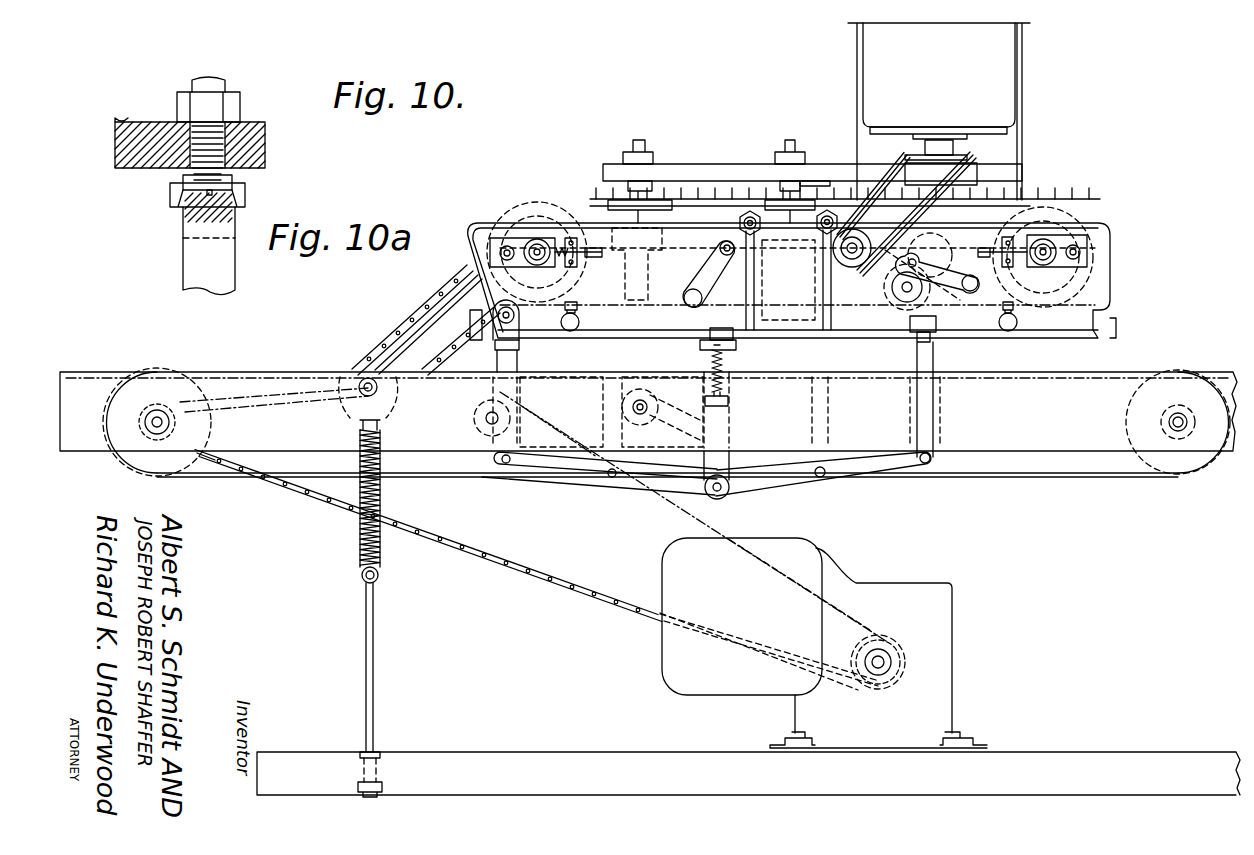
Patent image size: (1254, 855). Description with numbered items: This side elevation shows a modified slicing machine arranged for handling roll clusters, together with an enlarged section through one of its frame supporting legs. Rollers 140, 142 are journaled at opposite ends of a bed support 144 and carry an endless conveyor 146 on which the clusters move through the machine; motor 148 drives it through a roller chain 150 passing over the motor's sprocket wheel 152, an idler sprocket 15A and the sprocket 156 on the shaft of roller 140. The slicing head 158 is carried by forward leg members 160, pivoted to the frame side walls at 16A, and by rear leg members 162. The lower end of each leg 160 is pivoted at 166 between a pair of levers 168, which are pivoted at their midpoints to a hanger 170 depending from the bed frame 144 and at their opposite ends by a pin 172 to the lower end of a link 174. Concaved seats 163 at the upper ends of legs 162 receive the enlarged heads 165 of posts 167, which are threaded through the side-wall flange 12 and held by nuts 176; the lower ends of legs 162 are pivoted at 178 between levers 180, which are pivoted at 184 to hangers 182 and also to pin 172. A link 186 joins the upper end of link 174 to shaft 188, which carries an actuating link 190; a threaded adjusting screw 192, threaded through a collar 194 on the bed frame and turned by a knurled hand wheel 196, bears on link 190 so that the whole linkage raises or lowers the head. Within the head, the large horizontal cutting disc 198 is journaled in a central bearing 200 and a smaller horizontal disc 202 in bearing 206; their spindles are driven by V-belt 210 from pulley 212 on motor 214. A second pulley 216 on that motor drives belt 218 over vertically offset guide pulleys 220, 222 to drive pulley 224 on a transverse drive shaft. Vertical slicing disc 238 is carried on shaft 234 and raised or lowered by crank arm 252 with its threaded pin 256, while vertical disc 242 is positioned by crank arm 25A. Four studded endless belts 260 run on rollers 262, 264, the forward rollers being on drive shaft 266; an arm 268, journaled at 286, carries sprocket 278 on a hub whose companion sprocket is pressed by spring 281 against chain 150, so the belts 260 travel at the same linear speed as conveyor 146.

In FIG. 10A, the table plate 12 is at (272, 143).
In FIG. 10, the idler sprocket 15A is at (485, 422).
In FIG. 10, the pivot 16A is at (482, 340).
In FIG. 10, the roller 140 is at (150, 465).
In FIG. 10, the roller 142 is at (1195, 382).
In FIG. 10, the bed support 144 is at (113, 360).
In FIG. 10, the endless conveyor 146 is at (217, 482).
In FIG. 10, the motor 148 is at (672, 652).
In FIG. 10, the roller chain 150 is at (486, 556).
In FIG. 10, the sprocket wheel 152 is at (898, 670).
In FIG. 10, the sprocket 156 is at (142, 412).
In FIG. 10, the slicing head 158 is at (1110, 260).
In FIG. 10, the forward leg members 160 is at (518, 362).
In FIG. 10, the rear leg members 162 is at (935, 365).
In FIG. 10A, the rear leg members 162 is at (232, 275).
In FIG. 10A, the concaved seats 163 is at (248, 196).
In FIG. 10A, the enlarged heads 165 is at (180, 183).
In FIG. 10, the pivot 166 is at (498, 458).
In FIG. 10A, the posts 167 is at (212, 148).
In FIG. 10, the levers 168 is at (590, 478).
In FIG. 10, the hanger 170 is at (606, 392).
In FIG. 10, the pin 172 is at (728, 495).
In FIG. 10, the link 174 is at (732, 445).
In FIG. 10, the nuts 176 is at (912, 333).
In FIG. 10A, the nuts 176 is at (235, 108).
In FIG. 10, the pivot 178 is at (920, 464).
In FIG. 10, the levers 180 is at (880, 478).
In FIG. 10, the hangers 182 is at (820, 414).
In FIG. 10, the pivot 184 is at (815, 478).
In FIG. 10, the link 186 is at (690, 388).
In FIG. 10, the shaft 188 is at (644, 414).
In FIG. 10, the actuating link 190 is at (676, 410).
In FIG. 10, the threaded adjusting screw 192 is at (730, 398).
In FIG. 10, the collar 194 is at (700, 350).
In FIG. 10, the knurled hand wheel 196 is at (760, 360).
In FIG. 10, the large horizontal cutting disc 198 is at (598, 318).
In FIG. 10, the bearing 200 is at (740, 232).
In FIG. 10, the horizontal slicing disc 202 is at (890, 302).
In FIG. 10, the bearing 206 is at (895, 285).
In FIG. 10, the V-belt 210 is at (704, 172).
In FIG. 10, the pulley 212 is at (978, 178).
In FIG. 10, the motor 214 is at (1003, 110).
In FIG. 10, the pulley 216 is at (955, 152).
In FIG. 10, the belt 218 is at (845, 200).
In FIG. 10, the guide pulley 220 is at (915, 158).
In FIG. 10, the guide pulley 222 is at (972, 162).
In FIG. 10, the drive pulley 224 is at (856, 266).
In FIG. 10, the shaft 234 is at (740, 248).
In FIG. 10, the vertical slicing disc 238 is at (780, 352).
In FIG. 10, the vertical slicing disc 242 is at (955, 320).
In FIG. 10, the crank arm 252 is at (718, 255).
In FIG. 10, the threaded pin 256 is at (695, 298).
In FIG. 10, the studded endless belts 260 is at (578, 196).
In FIG. 10, the rollers 262 is at (530, 215).
In FIG. 10, the rollers 264 is at (1060, 214).
In FIG. 10, the drive shaft 266 is at (498, 248).
In FIG. 10, the arm 268 is at (433, 325).
In FIG. 10, the sprocket wheel 278 is at (372, 428).
In FIG. 10, the spring 281 is at (360, 540).
In FIG. 10, the pivot 286 is at (358, 388).
In FIG. 10, the crank arm 25A is at (950, 250).